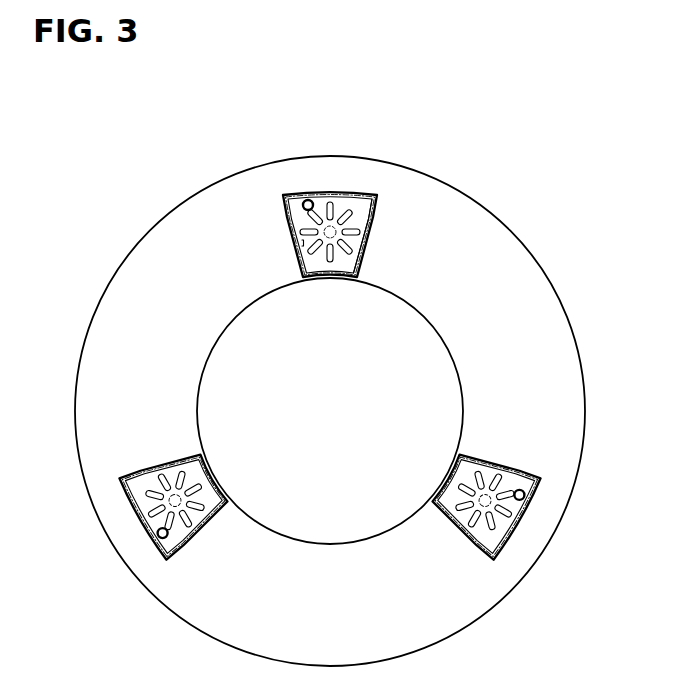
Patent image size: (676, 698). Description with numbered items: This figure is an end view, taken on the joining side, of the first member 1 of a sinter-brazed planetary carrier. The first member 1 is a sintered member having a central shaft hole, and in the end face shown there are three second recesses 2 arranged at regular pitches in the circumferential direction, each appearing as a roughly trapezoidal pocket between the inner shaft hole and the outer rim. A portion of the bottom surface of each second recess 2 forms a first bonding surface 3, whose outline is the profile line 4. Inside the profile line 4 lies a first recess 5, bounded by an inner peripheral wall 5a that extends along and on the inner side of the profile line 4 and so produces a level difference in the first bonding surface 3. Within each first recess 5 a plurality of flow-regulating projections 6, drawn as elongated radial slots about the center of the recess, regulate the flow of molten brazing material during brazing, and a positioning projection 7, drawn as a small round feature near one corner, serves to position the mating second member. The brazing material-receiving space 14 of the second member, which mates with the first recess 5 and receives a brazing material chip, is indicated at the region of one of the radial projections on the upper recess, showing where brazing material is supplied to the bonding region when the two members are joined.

The first member 1 is at (538, 293).
The second recess 2 is at (317, 273).
The first bonding surface 3 is at (362, 250).
The profile line 4 is at (334, 194).
The first recess 5 is at (372, 218).
The inner peripheral wall 5a is at (301, 243).
The flow-regulating projection 6 is at (333, 257).
The positioning projection 7 is at (306, 200).
The brazing material-receiving space 14 is at (345, 213).